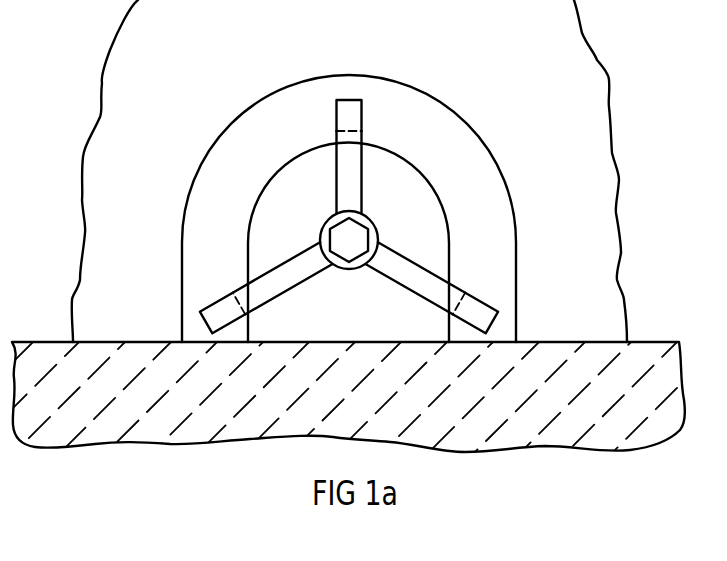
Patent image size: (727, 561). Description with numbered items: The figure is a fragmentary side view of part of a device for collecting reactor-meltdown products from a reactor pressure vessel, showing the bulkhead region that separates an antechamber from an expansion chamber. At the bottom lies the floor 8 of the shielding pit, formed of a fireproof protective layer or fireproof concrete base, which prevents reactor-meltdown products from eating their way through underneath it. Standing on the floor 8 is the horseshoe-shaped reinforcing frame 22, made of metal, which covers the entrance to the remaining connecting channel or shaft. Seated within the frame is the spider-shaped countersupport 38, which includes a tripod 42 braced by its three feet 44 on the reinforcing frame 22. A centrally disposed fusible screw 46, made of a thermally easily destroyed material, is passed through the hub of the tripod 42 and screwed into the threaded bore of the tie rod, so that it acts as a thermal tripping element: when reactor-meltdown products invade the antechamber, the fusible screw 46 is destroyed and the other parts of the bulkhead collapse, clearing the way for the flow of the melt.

The floor 8 is at (153, 422).
The reinforcing frame 22 is at (240, 133).
The countersupport 38 is at (325, 220).
The tripod 42 is at (352, 172).
The feet 44 is at (348, 113).
The fusible screw 46 is at (357, 238).